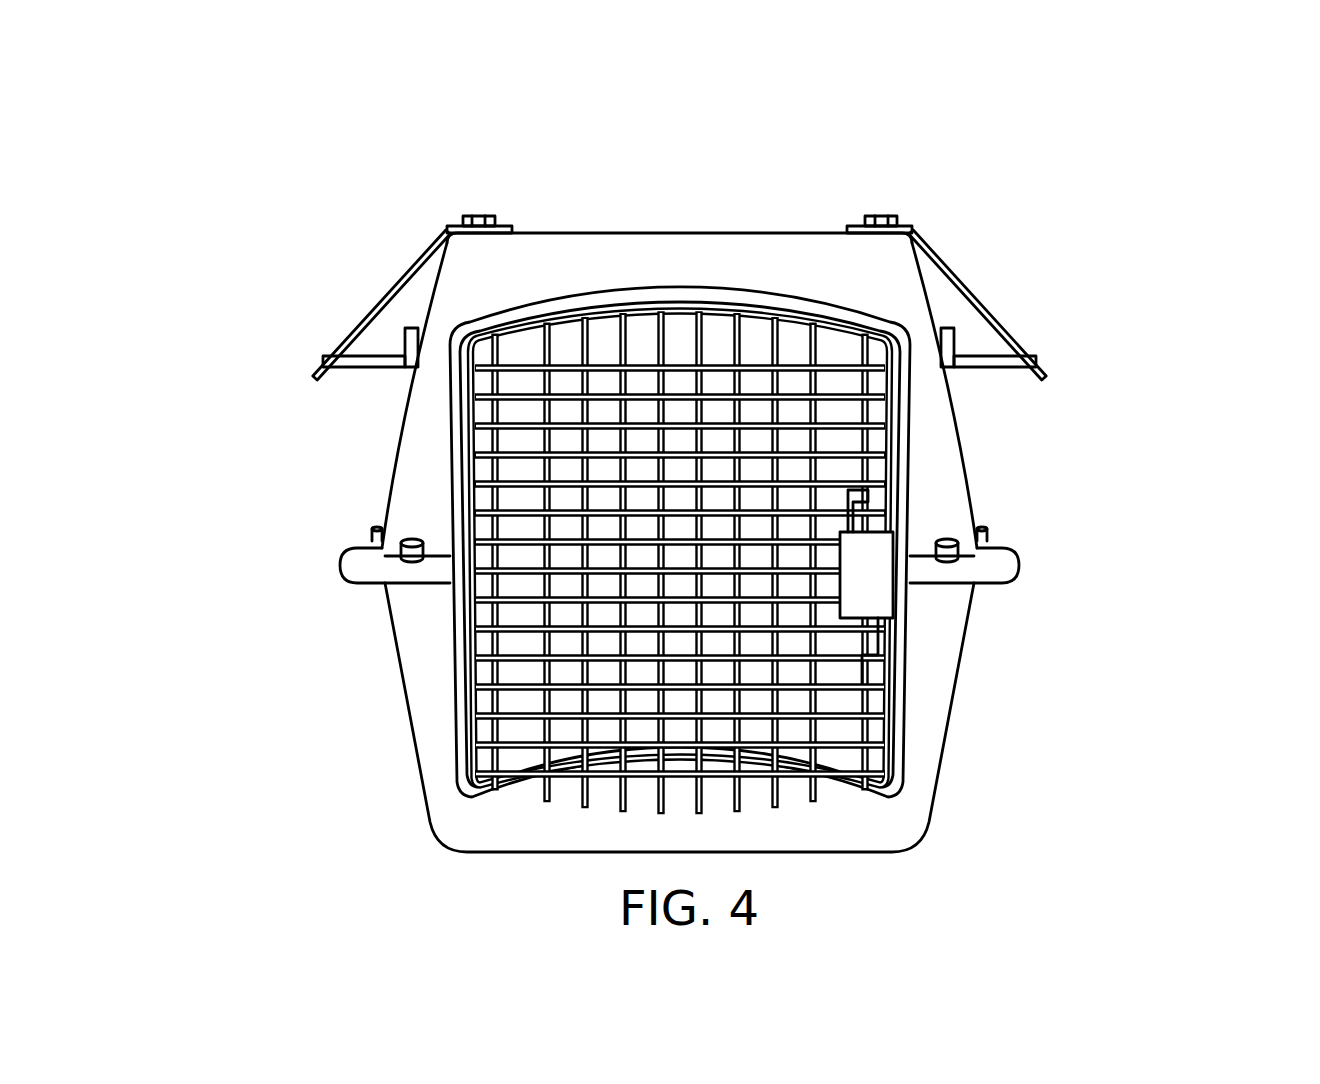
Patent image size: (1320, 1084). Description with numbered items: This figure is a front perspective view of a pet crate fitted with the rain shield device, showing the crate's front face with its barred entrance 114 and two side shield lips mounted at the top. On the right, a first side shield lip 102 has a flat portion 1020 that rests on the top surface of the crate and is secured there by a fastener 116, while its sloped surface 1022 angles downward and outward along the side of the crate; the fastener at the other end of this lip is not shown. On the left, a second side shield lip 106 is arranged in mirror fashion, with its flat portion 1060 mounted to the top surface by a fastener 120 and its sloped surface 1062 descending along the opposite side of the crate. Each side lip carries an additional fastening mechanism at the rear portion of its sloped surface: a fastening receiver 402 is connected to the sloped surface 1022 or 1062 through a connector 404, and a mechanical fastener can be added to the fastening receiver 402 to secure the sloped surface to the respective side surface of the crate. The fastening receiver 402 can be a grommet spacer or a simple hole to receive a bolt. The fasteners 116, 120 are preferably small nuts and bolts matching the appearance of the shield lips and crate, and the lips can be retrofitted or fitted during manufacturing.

The first side shield lip 102 is at (1022, 223).
The second side shield lip 106 is at (350, 227).
The entrance 114 is at (503, 667).
The fastener 116 is at (880, 214).
The fastener 120 is at (485, 215).
The fastening receiver 402 is at (407, 337).
The connector 404 is at (378, 367).
The flat portion 1020 is at (905, 225).
The sloped surface 1022 is at (988, 304).
The flat portion 1060 is at (446, 222).
The sloped surface 1062 is at (373, 300).